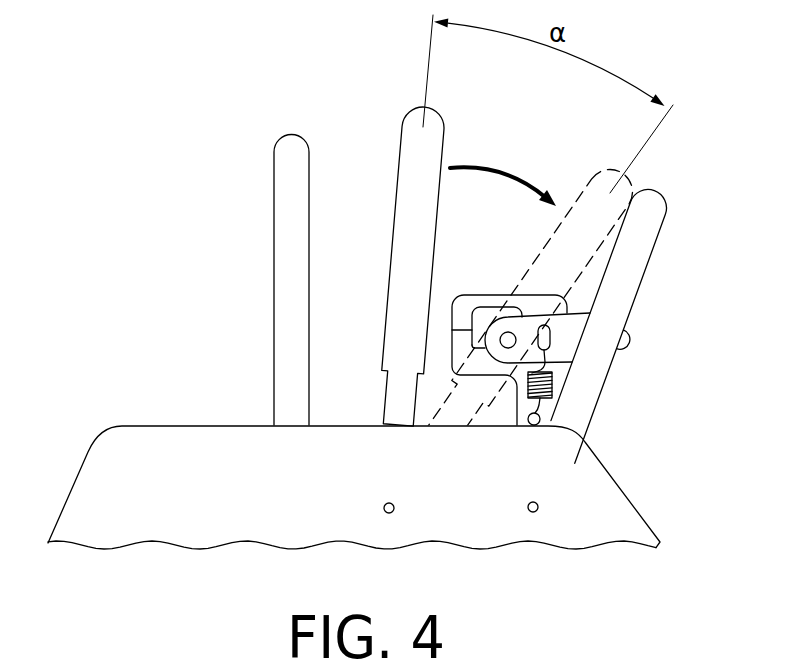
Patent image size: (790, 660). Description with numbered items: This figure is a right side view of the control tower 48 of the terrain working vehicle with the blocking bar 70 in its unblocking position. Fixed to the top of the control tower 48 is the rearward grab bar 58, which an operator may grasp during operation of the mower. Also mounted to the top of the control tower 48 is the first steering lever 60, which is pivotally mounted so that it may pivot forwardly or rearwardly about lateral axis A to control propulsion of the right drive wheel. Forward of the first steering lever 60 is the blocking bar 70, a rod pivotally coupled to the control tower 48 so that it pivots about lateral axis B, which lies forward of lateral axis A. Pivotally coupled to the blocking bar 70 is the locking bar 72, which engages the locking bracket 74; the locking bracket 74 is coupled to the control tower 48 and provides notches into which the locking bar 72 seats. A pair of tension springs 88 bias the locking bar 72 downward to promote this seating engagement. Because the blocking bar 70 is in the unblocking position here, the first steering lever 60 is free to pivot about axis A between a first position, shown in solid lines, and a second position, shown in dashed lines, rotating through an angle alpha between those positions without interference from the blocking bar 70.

The control tower 48 is at (118, 442).
The rearward grab bar 58 is at (288, 148).
The first steering lever 60 is at (413, 130).
The blocking bar 70 is at (657, 203).
The locking bar 72 is at (568, 337).
The locking bracket 74 is at (495, 297).
The tension springs 88 is at (553, 385).
The lateral axis A is at (398, 528).
The lateral axis B is at (542, 528).